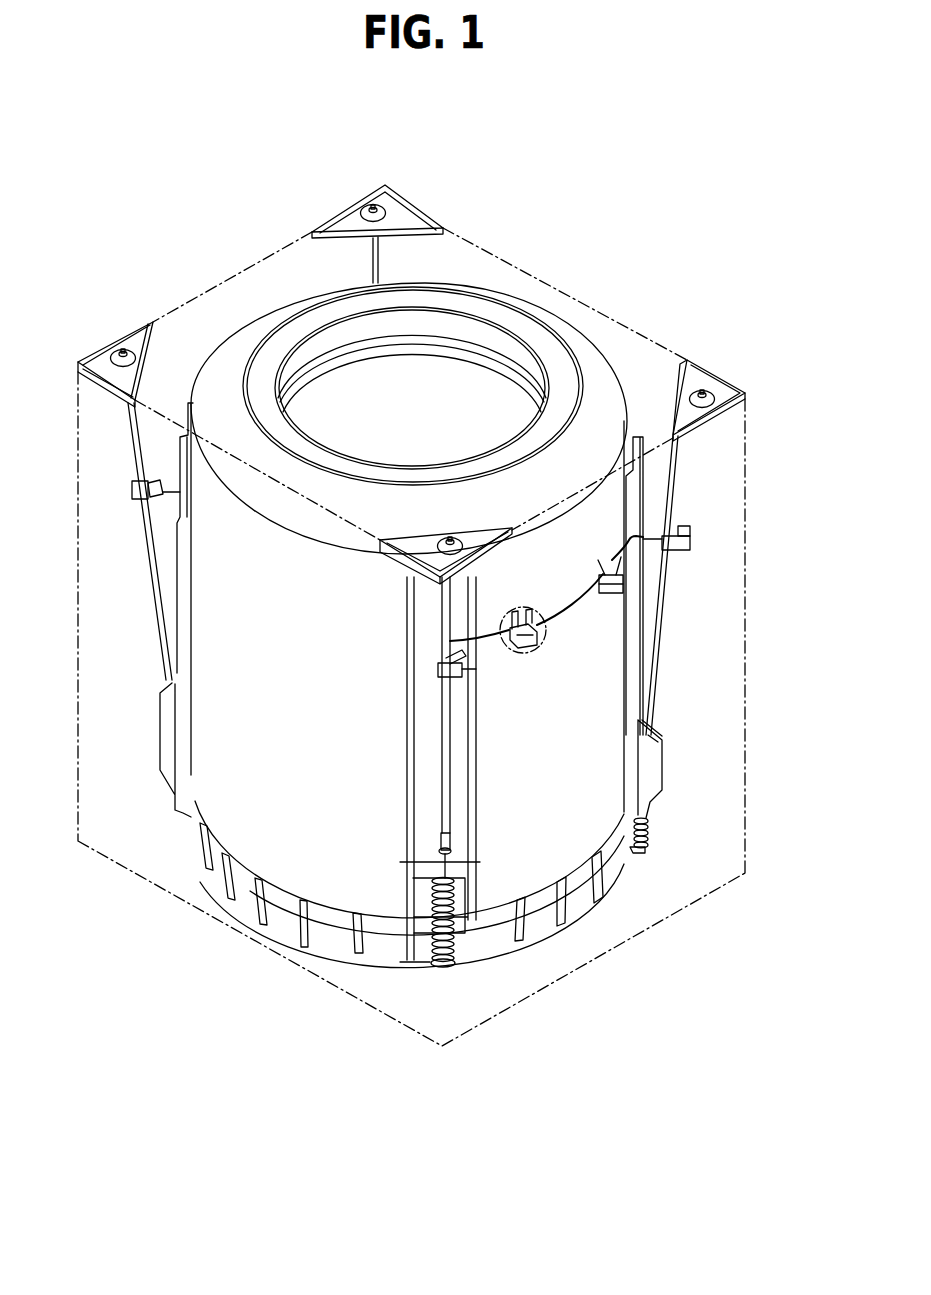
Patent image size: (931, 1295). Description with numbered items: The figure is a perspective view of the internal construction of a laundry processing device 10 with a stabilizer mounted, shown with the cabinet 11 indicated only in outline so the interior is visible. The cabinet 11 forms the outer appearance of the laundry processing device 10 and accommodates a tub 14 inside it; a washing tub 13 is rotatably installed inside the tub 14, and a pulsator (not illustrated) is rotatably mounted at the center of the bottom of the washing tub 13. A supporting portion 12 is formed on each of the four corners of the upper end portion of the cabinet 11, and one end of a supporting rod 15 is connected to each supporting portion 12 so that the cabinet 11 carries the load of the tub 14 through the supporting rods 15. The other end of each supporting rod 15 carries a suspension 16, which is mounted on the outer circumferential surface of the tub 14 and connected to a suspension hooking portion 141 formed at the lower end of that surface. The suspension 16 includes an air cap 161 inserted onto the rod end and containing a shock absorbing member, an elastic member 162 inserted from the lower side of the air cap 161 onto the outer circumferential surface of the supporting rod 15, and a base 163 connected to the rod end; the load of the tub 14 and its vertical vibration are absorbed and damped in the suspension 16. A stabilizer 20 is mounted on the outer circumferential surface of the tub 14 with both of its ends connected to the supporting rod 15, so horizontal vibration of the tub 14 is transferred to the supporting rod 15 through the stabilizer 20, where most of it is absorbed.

The laundry processing device 10 is at (176, 230).
The cabinet 11 is at (745, 737).
The supporting portion 12 is at (473, 542).
The washing tub 13 is at (473, 398).
The tub 14 is at (607, 627).
The suspension hooking portion 141 is at (422, 856).
The supporting rod 15 is at (443, 776).
The suspension 16 is at (593, 1077).
The air cap 161 is at (392, 882).
The elastic member 162 is at (455, 915).
The base 163 is at (438, 964).
The stabilizer 20 is at (570, 635).